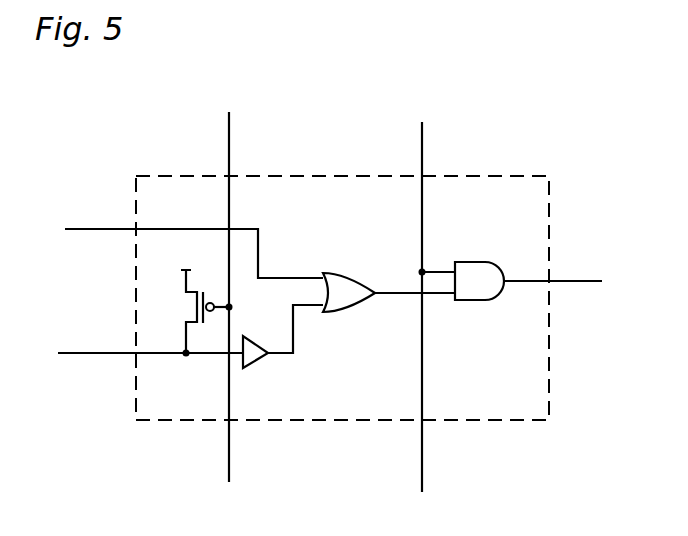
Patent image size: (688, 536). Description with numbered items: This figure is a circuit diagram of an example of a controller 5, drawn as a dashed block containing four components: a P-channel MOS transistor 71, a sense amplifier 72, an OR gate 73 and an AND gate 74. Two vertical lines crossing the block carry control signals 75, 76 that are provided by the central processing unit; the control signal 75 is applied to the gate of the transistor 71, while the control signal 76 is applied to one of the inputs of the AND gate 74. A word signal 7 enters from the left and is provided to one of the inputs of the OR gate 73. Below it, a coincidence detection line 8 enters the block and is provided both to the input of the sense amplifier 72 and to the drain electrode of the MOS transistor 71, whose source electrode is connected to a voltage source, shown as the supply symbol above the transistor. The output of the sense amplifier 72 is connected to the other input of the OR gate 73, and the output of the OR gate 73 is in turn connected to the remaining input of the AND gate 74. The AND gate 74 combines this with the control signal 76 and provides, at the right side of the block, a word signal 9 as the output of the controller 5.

The controller 5 is at (497, 176).
The word signal 7 is at (82, 229).
The coincidence detection line 8 is at (93, 353).
The word signal 9 is at (580, 281).
The P-channel MOS transistor 71 is at (190, 305).
The sense amplifier 72 is at (262, 358).
The OR gate 73 is at (340, 272).
The AND gate 74 is at (488, 300).
The control signal 75 is at (230, 133).
The control signal 76 is at (424, 122).